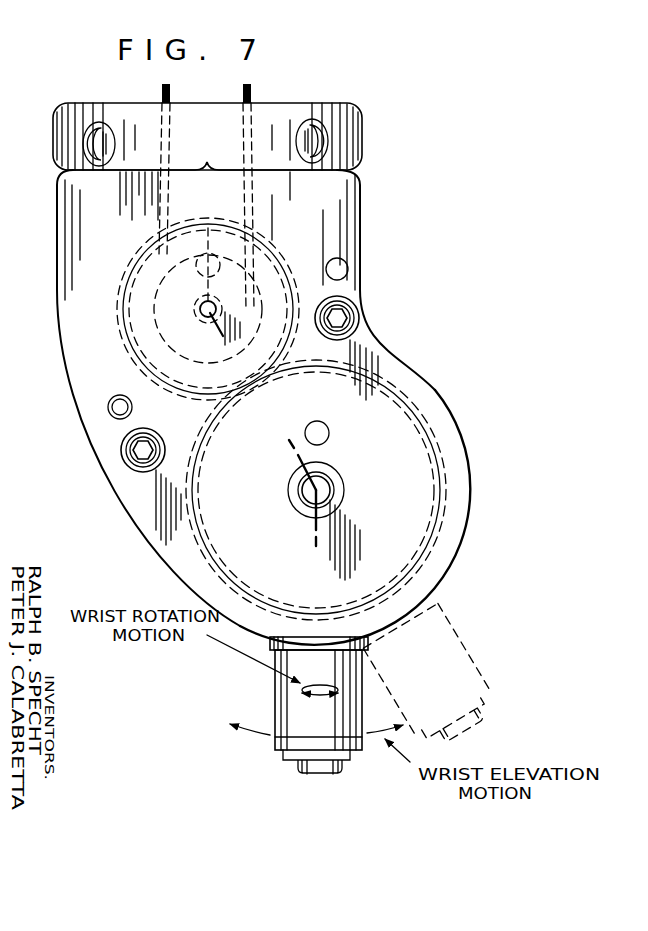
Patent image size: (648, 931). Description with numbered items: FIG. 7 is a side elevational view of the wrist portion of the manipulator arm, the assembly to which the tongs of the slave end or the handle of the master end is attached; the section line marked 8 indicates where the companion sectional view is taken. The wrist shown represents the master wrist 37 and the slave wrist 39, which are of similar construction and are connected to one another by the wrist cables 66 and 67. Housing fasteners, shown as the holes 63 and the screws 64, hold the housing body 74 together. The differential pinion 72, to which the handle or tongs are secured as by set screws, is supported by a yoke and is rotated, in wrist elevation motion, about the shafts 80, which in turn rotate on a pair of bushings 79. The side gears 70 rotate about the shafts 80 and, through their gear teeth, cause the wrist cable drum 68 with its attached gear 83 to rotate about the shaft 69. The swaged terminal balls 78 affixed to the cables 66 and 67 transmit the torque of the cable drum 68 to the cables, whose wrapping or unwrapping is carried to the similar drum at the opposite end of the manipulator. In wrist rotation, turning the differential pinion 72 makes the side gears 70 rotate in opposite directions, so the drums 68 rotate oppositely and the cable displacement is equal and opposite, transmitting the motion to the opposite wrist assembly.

The section line 8- 8 is at (207, 128).
The master wrist 37 is at (376, 168).
The slave wrist 39 is at (430, 140).
The holes 63 is at (349, 269).
The screws 64 is at (348, 318).
The wrist cable 66 is at (253, 90).
The wrist cable 67 is at (162, 92).
The wrist cable drum 68 is at (160, 334).
The shaft 69 is at (204, 324).
The side gear 70 is at (443, 431).
The differential pinion 72 is at (288, 684).
The housing body 74 is at (75, 237).
The swaged terminal ball 78 is at (208, 228).
The bushing 79 is at (303, 504).
The shaft 80 is at (306, 490).
The gear 83 is at (126, 278).